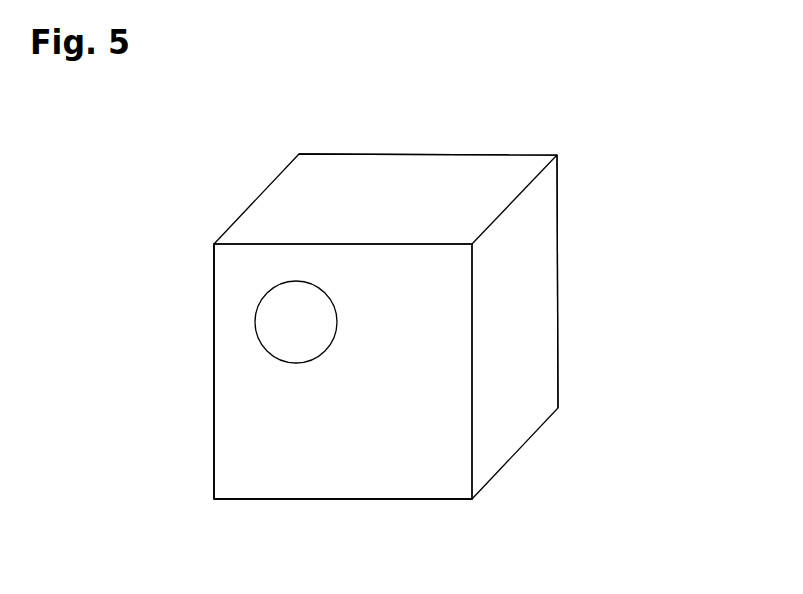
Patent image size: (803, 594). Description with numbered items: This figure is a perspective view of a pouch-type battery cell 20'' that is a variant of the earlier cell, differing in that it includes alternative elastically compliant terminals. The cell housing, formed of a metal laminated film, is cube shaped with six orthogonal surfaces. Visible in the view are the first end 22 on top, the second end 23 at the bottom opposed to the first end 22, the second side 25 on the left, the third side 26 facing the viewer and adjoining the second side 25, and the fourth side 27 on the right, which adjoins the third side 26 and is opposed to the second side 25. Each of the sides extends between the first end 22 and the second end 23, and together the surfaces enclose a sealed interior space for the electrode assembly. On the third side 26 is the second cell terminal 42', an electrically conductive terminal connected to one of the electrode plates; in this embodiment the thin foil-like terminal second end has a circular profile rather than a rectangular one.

The cell 20'' is at (478, 277).
The first end 22 is at (438, 182).
The second end 23 is at (347, 500).
The second side 25 is at (213, 398).
The third side 26 is at (427, 407).
The fourth side 27 is at (542, 323).
The second cell terminal 42' is at (230, 322).